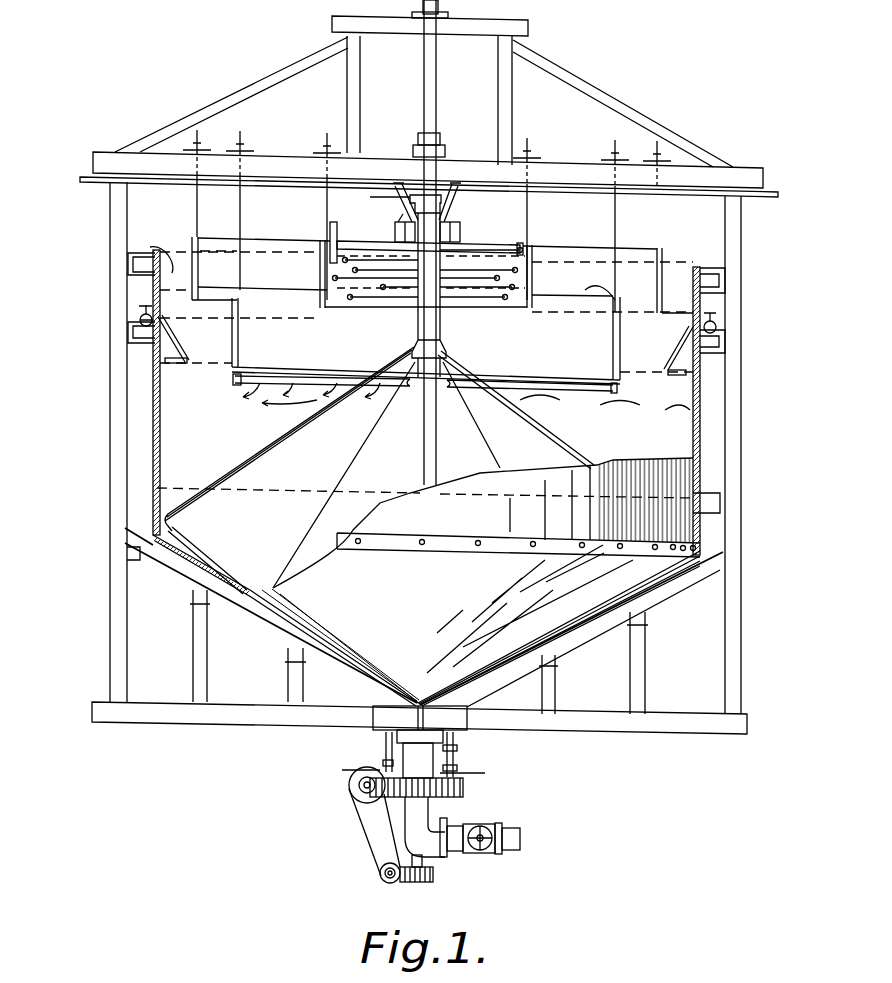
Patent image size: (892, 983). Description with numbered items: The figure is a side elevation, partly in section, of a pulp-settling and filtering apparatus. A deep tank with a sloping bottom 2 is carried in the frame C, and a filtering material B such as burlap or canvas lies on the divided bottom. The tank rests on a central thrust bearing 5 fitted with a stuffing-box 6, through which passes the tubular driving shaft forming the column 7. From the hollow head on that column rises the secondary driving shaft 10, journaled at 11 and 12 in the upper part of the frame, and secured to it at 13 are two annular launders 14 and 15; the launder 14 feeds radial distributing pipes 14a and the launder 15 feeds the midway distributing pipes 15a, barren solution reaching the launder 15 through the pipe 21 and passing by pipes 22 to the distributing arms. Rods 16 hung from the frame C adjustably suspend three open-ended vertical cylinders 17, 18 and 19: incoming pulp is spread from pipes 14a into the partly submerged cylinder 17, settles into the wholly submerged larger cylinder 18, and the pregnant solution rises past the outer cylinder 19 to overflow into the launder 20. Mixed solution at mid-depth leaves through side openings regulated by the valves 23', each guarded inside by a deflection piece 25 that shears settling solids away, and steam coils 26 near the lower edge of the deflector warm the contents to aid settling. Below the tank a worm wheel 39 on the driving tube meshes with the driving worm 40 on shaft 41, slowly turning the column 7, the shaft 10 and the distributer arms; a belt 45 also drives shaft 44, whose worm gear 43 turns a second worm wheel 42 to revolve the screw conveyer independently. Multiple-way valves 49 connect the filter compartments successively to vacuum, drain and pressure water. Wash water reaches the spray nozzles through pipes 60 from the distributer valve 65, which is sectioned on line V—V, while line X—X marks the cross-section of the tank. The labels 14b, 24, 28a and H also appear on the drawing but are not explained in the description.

The sloping bottom 2 is at (190, 573).
The central thrust bearing 5 is at (452, 716).
The stuffing-box 6 is at (456, 740).
The column 7 is at (458, 768).
The secondary driving shaft 10 is at (428, 463).
The journal 11 is at (446, 150).
The journal 12 is at (442, 14).
The launder attachment point 13 is at (432, 228).
The annular launder 14 is at (446, 232).
The distributing pipes 14a is at (360, 242).
The bracket 14b is at (320, 268).
The annular launder 15 is at (460, 234).
The distributing pipes 15a is at (317, 382).
The rods 16 is at (239, 220).
The vertical cylinder 17 is at (527, 280).
The vertical cylinder 18 is at (236, 338).
The vertical cylinder 19 is at (190, 312).
The overflow launder 20 is at (145, 253).
The pipe 21 is at (312, 185).
The pipes 22 is at (446, 358).
The valve 23' is at (109, 320).
The bracket 24 is at (135, 335).
The deflection piece 25 is at (172, 348).
The steam coils 26 is at (170, 366).
The deflector 28a is at (444, 345).
The worm wheel 39 is at (463, 788).
The driving worm 40 is at (349, 787).
The shaft 41 is at (355, 805).
The worm wheel 42 is at (434, 876).
The worm gear 43 is at (362, 845).
The shaft 44 is at (380, 873).
The driving belt 45 is at (388, 884).
The multiple-way valve 49 is at (386, 760).
The pipes 60 is at (413, 327).
The distributer valve 65 is at (424, 200).
The filtering material B is at (270, 585).
The frame C is at (121, 601).
The tank H is at (140, 428).
The section line V— V is at (403, 201).
The section line X— X is at (422, 494).